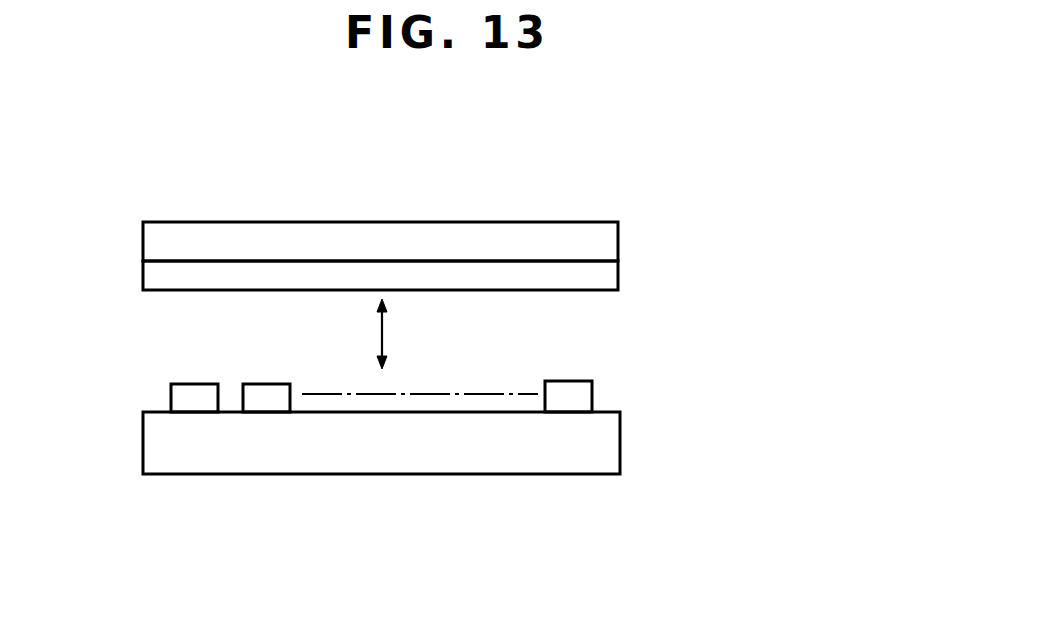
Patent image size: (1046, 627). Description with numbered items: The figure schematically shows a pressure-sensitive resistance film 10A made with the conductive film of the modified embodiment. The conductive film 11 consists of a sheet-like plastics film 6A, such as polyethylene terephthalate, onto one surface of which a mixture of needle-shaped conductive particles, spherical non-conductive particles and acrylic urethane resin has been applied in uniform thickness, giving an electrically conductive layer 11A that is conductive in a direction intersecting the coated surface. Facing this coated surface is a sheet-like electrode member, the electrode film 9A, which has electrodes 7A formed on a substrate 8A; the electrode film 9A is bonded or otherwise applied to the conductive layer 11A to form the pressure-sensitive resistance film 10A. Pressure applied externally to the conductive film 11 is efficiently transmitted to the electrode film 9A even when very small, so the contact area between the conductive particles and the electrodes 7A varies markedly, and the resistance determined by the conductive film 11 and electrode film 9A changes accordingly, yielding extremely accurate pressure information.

The conductive film 11 is at (297, 221).
The film 6A is at (603, 243).
The electrically conductive layer 11A is at (612, 272).
The electrodes 7A is at (198, 384).
The substrate 8A is at (603, 456).
The electrode film 9A is at (367, 480).
The pressure-sensitive resistance film 10A is at (118, 203).